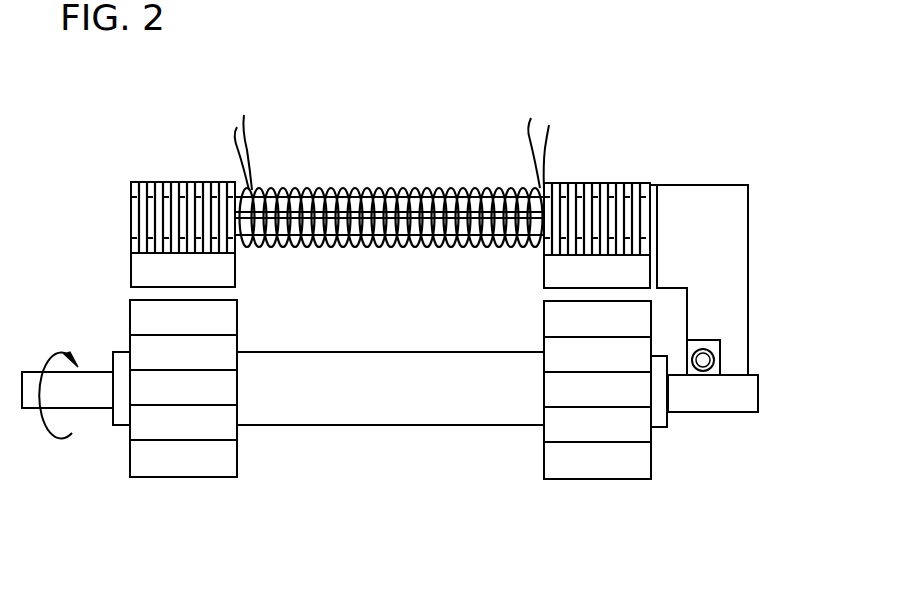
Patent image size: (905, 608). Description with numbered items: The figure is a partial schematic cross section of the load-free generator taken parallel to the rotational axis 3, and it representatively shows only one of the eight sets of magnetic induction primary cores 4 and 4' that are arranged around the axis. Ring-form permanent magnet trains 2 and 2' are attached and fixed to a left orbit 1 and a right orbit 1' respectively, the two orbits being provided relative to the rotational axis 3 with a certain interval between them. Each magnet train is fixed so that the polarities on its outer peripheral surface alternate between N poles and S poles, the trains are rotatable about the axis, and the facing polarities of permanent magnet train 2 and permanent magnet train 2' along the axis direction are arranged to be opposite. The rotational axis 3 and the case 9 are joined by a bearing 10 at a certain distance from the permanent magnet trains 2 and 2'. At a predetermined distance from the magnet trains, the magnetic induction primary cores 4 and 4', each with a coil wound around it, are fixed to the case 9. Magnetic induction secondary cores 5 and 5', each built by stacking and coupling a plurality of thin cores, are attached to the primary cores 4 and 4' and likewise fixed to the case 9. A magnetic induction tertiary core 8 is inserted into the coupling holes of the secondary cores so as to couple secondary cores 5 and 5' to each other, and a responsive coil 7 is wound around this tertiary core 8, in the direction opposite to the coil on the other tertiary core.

The left orbit 1 is at (283, 435).
The right orbit 1' is at (704, 438).
The permanent magnet train 2 is at (221, 390).
The permanent magnet train 2' is at (558, 391).
The rotational axis 3 is at (32, 402).
The magnetic induction primary core 4 is at (144, 270).
The magnetic induction primary core 4' is at (558, 294).
The magnetic induction secondary core 5 is at (144, 199).
The magnetic induction secondary core 5' is at (597, 166).
The responsive coil 7 is at (388, 189).
The magnetic induction tertiary core 8 is at (343, 213).
The case 9 is at (727, 216).
The bearing 10 is at (705, 360).